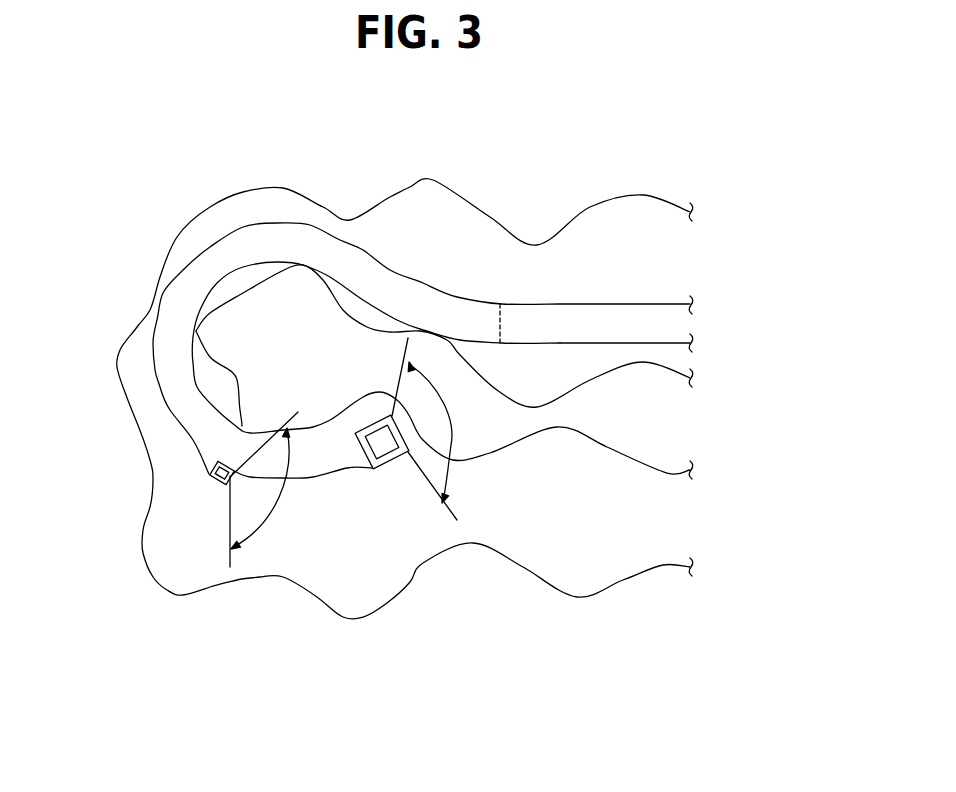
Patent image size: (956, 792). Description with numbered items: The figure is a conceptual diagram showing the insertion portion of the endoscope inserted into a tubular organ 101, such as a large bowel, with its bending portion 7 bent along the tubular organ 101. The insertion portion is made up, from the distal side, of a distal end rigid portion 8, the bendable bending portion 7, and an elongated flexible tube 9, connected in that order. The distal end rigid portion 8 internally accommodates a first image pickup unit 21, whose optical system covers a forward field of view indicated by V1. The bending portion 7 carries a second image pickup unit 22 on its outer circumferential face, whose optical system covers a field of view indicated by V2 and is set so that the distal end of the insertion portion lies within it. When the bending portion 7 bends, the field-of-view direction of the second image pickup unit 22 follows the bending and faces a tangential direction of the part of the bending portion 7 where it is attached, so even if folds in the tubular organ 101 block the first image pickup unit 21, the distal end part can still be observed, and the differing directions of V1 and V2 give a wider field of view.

The bending portion 7 is at (347, 463).
The distal end rigid portion 8 is at (388, 458).
The flexible tube 9 is at (618, 313).
The first image pickup unit 21 is at (377, 438).
The second image pickup unit 22 is at (220, 479).
The tubular organ 101 is at (542, 562).
The forward field of view of first image pickup optical system V1 is at (450, 423).
The forward field of view of second image pickup optical system V2 is at (257, 527).